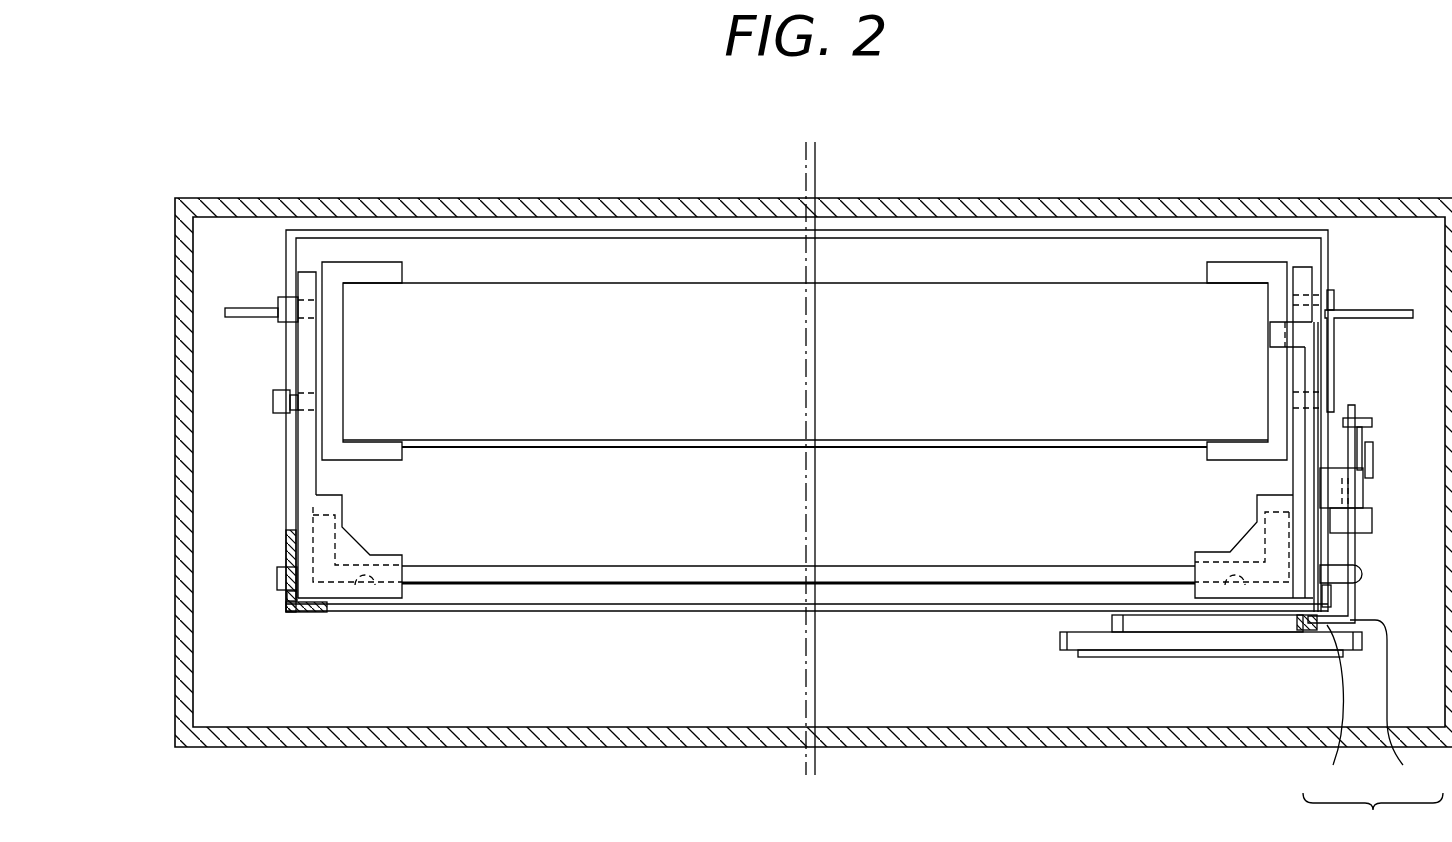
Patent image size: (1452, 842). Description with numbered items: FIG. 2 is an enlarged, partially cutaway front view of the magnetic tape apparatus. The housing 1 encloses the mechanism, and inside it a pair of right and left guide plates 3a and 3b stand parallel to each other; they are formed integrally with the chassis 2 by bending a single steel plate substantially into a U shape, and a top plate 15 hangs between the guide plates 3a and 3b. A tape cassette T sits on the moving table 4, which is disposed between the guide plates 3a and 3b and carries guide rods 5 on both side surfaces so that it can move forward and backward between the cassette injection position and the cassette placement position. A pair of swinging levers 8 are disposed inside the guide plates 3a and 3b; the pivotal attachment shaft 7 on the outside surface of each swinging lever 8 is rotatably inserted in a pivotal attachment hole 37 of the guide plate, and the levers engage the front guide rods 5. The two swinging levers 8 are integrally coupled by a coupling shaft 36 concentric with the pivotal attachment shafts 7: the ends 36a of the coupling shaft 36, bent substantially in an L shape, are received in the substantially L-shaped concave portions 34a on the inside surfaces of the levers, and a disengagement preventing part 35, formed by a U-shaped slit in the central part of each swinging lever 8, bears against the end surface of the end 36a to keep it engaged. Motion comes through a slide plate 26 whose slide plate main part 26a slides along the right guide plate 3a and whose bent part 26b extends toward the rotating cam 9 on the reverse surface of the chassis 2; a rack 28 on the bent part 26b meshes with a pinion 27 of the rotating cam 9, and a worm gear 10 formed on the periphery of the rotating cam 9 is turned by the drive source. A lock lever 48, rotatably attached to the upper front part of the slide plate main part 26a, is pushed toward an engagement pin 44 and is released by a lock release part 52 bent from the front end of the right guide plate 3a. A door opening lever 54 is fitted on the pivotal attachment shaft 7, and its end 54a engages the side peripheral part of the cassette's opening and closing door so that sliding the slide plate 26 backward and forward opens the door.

The housing 1 is at (910, 200).
The tape roll T is at (980, 297).
The chassis 2 is at (665, 612).
The right guide plate 3a is at (1330, 243).
The left guide plate 3b is at (287, 515).
The moving table 4 is at (947, 447).
The guide rods 5 is at (278, 300).
The pivotal attachment shaft 7 is at (277, 578).
The swinging lever 8 is at (309, 270).
The rotating cam 9 is at (1068, 660).
The worm gear 10 is at (1060, 640).
The top plate 15 is at (712, 236).
The slide plate 26 is at (1373, 816).
The slide plate main part 26a is at (1394, 709).
The bent part 26b is at (1330, 711).
The pinion 27 is at (1153, 632).
The rack 28 is at (1303, 657).
The concave portion 34a is at (368, 592).
The disengagement preventing part 35 is at (318, 507).
The coupling shaft 36 is at (730, 567).
The ends of coupling shaft 36a is at (337, 548).
The pivotal attachment hole 37 is at (287, 598).
The engagement pin 44 is at (1372, 520).
The lock lever 48 is at (1354, 407).
The lock release part 52 is at (1365, 490).
The door opening lever 54 is at (1300, 363).
The end of door opening lever 54a is at (1270, 333).